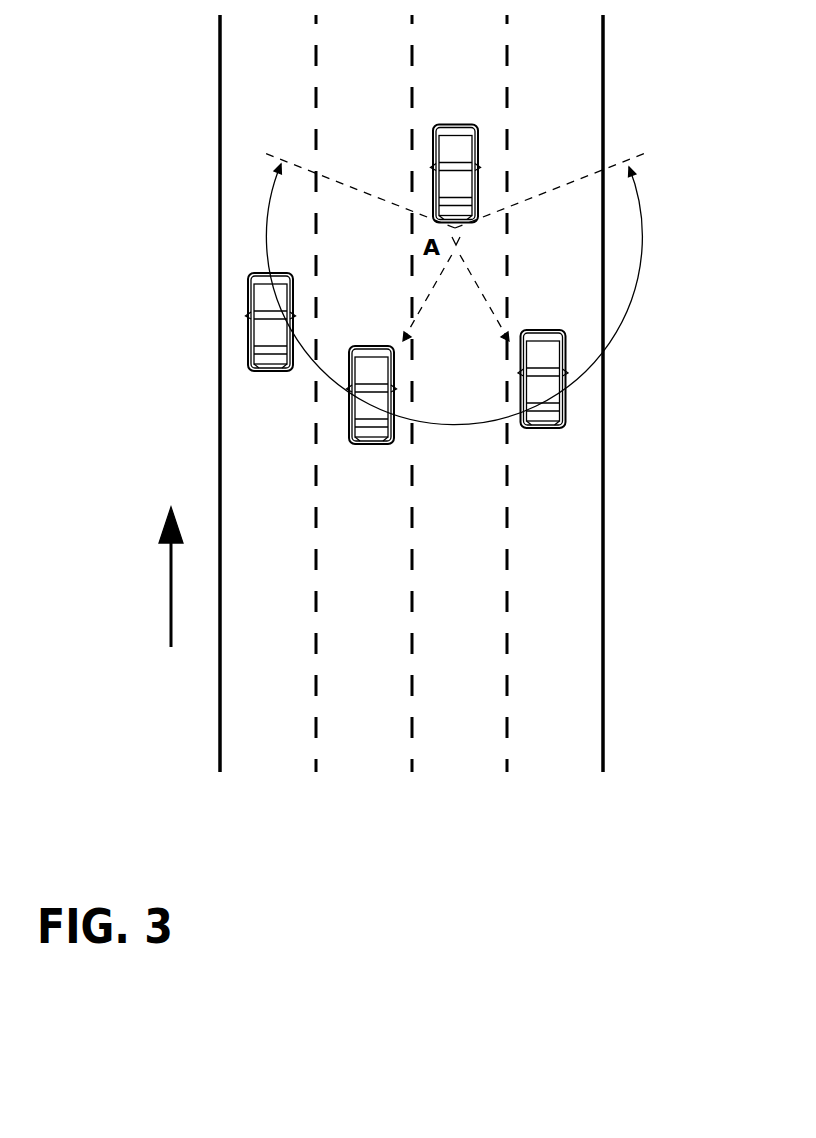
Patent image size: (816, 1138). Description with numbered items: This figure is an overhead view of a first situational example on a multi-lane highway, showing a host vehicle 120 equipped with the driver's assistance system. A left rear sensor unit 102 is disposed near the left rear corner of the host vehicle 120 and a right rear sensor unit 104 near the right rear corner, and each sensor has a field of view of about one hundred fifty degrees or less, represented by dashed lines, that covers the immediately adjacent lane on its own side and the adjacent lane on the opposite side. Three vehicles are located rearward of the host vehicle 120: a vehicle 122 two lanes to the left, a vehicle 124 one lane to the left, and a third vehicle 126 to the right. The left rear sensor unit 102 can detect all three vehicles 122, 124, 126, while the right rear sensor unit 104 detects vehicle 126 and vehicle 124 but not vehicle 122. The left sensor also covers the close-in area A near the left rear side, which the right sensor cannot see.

The left rear sensor unit 102 is at (441, 223).
The right rear sensor unit 104 is at (470, 224).
The host vehicle 120 is at (477, 177).
The vehicle 122 is at (253, 332).
The vehicle 124 is at (362, 445).
The third vehicle 126 is at (563, 399).